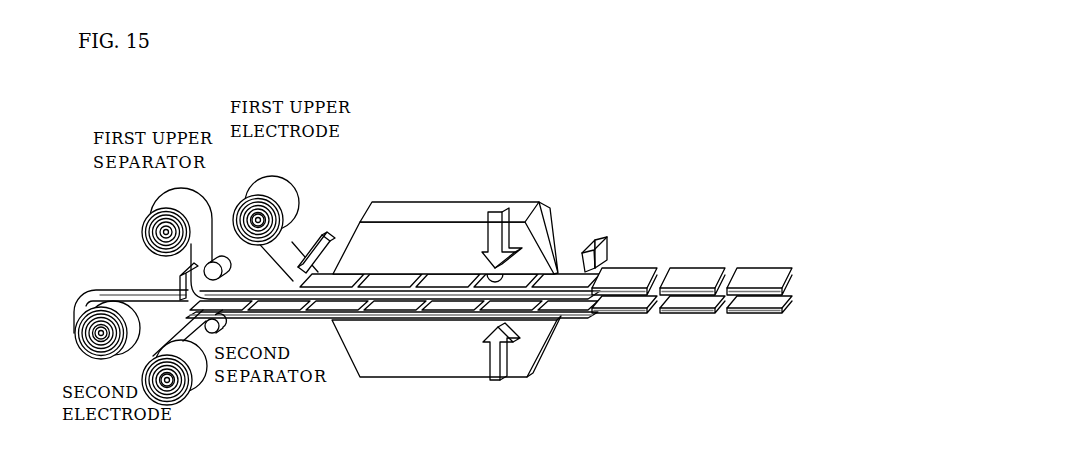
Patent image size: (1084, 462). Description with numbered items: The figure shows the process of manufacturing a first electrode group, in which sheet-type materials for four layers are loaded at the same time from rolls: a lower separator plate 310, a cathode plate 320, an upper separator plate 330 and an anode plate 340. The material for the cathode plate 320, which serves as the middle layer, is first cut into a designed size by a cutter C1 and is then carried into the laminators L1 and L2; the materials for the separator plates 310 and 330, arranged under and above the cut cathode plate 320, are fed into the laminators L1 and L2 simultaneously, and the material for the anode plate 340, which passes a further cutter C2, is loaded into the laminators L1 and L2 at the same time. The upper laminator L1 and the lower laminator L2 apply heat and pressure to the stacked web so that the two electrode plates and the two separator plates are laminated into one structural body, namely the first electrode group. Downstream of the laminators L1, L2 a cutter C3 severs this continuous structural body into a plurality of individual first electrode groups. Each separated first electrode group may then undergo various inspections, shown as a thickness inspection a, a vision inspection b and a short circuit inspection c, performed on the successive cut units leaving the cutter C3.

The separator plate 310 is at (193, 396).
The cathode plate 320 is at (93, 290).
The separator plate 330 is at (143, 223).
The anode plate 340 is at (285, 193).
The first cutter C1 is at (178, 286).
The second cutter C2 is at (323, 237).
The cutter C3 is at (602, 232).
The laminator L1 is at (443, 202).
The laminator L2 is at (433, 358).
The thickness inspection a is at (647, 322).
The vision inspection b is at (715, 322).
The short circuit inspection c is at (782, 322).